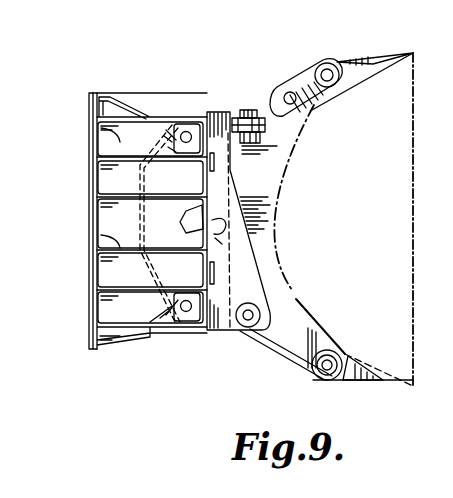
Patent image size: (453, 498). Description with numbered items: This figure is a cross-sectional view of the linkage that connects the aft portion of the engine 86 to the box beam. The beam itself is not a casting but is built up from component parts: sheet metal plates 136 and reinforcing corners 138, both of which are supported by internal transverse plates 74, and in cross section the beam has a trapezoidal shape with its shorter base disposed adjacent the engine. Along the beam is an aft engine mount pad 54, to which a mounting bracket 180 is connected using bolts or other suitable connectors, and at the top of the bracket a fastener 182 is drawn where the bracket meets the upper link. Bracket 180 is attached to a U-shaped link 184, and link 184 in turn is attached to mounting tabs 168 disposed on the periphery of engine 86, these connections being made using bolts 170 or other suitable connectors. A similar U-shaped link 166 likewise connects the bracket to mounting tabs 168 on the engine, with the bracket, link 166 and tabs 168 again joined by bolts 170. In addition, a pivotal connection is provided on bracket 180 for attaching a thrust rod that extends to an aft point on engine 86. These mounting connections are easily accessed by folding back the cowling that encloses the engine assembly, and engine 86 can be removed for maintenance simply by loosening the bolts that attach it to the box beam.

The aft engine mount pad 54 is at (204, 116).
The internal transverse plates 74 is at (96, 141).
The engine 86 is at (394, 223).
The sheet metal plates 136 is at (90, 297).
The reinforcing corners 138 is at (92, 92).
The U-shaped link 166 is at (318, 62).
The mounting tabs 168 is at (372, 62).
The bolts 170 is at (280, 90).
The mounting bracket 180 is at (222, 112).
The clamp bolt 182 is at (266, 127).
The U-shaped link 184 is at (280, 348).